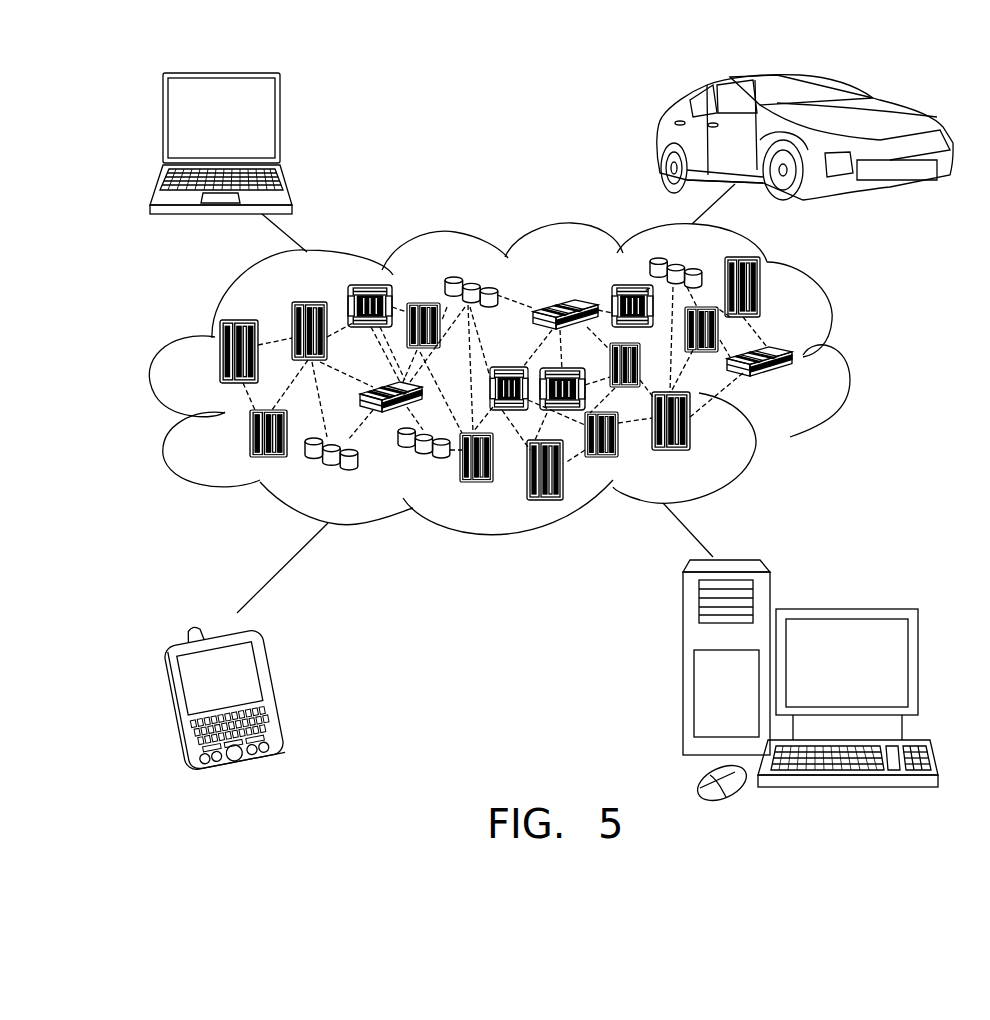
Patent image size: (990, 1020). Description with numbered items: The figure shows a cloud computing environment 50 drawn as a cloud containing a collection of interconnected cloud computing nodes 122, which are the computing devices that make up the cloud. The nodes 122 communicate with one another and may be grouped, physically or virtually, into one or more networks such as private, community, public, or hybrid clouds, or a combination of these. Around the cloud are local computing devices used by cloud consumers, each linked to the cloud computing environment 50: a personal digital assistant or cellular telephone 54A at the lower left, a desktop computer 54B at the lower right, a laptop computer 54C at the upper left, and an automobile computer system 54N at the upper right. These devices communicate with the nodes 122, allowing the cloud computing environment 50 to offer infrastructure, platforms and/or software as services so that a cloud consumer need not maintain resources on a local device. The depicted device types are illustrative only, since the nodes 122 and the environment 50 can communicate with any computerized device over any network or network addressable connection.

The cloud computing environment 50 is at (846, 360).
The cloud computing nodes 122 is at (793, 387).
The personal digital assistant or cellular telephone 54A is at (272, 687).
The desktop computer 54B is at (843, 607).
The laptop computer 54C is at (280, 125).
The automobile computer system 54N is at (658, 139).